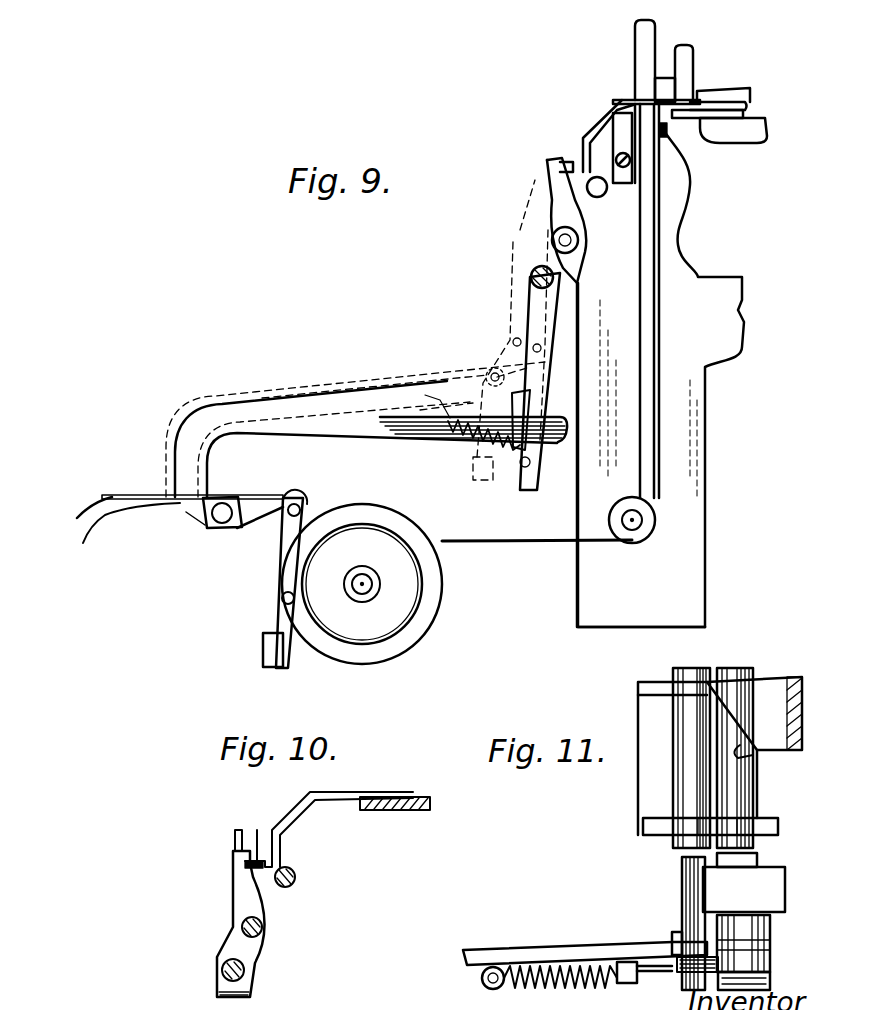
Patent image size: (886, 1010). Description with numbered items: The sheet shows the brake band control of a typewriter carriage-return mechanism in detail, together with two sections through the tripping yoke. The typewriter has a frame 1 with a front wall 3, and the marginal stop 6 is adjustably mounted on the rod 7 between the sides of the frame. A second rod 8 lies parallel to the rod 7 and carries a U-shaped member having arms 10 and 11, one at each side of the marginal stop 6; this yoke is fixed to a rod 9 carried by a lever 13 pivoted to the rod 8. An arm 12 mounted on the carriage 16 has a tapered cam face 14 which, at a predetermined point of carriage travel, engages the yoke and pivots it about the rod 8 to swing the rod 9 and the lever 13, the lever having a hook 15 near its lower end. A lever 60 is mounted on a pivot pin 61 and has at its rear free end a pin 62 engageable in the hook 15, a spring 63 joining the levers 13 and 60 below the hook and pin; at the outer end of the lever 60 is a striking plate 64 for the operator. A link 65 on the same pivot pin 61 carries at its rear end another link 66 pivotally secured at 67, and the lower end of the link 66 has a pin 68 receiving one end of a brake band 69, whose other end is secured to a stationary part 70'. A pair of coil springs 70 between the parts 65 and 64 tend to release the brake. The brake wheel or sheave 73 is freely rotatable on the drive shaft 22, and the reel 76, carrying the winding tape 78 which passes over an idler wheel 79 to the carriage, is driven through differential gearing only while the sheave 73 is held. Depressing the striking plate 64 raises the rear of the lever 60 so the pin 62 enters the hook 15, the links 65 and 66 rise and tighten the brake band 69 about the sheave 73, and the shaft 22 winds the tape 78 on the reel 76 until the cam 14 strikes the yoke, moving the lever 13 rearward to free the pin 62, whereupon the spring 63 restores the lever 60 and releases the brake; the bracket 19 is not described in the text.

In FIG. 9, the frame 1 is at (735, 335).
In FIG. 9, the front wall 3 is at (578, 606).
In FIG. 10, the marginal stop 6 is at (238, 833).
In FIG. 9, the rod 7 is at (605, 194).
In FIG. 10, the rod 7 is at (296, 876).
In FIG. 9, the rod 8 is at (578, 242).
In FIG. 10, the rod 8 is at (263, 922).
In FIG. 11, the rod 8 is at (760, 798).
In FIG. 9, the rod 9 is at (530, 272).
In FIG. 10, the rod 9 is at (244, 971).
In FIG. 11, the rod 9 is at (683, 887).
In FIG. 11, the arm of U-shaped member 10 is at (638, 692).
In FIG. 10, the arm of U-shaped member 11 is at (187, 837).
In FIG. 11, the arm of U-shaped member 11 is at (643, 827).
In FIG. 10, the arm 12 is at (328, 792).
In FIG. 11, the arm 12 is at (772, 683).
In FIG. 9, the lever 13 is at (530, 300).
In FIG. 11, the lever 13 is at (672, 970).
In FIG. 10, the cam face 14 is at (258, 837).
In FIG. 11, the cam face 14 is at (753, 755).
In FIG. 9, the hook 15 is at (530, 420).
In FIG. 10, the carriage 16 is at (417, 798).
In FIG. 9, the bracket 19 is at (667, 137).
In FIG. 9, the drive shaft 22 is at (362, 582).
In FIG. 9, the lever 60 is at (330, 406).
In FIG. 11, the lever 60 is at (522, 950).
In FIG. 9, the pivot pin 61 is at (223, 523).
In FIG. 9, the pin 62 is at (510, 427).
In FIG. 9, the spring 63 is at (464, 445).
In FIG. 11, the spring 63 is at (549, 988).
In FIG. 9, the striking plate 64 is at (102, 523).
In FIG. 9, the link 65 is at (243, 505).
In FIG. 9, the link 66 is at (283, 527).
In FIG. 9, the pivot 67 is at (303, 497).
In FIG. 9, the pin 68 is at (283, 600).
In FIG. 9, the brake band 69 is at (281, 560).
In FIG. 9, the coil springs 70 is at (184, 535).
In FIG. 9, the stationary part 70' is at (259, 665).
In FIG. 9, the brake wheel or sheave 73 is at (400, 588).
In FIG. 9, the reel 76 is at (398, 643).
In FIG. 9, the winding tape 78 is at (498, 540).
In FIG. 9, the idler wheel 79 is at (642, 540).